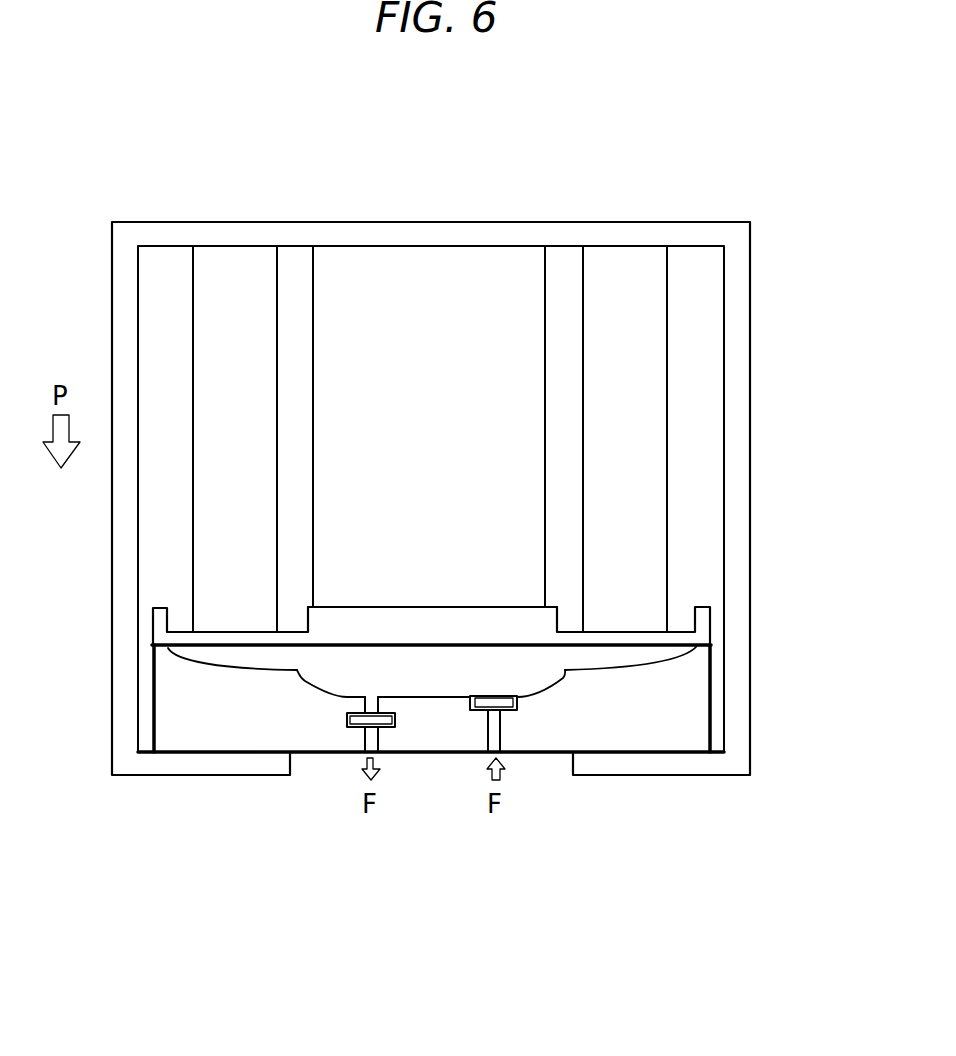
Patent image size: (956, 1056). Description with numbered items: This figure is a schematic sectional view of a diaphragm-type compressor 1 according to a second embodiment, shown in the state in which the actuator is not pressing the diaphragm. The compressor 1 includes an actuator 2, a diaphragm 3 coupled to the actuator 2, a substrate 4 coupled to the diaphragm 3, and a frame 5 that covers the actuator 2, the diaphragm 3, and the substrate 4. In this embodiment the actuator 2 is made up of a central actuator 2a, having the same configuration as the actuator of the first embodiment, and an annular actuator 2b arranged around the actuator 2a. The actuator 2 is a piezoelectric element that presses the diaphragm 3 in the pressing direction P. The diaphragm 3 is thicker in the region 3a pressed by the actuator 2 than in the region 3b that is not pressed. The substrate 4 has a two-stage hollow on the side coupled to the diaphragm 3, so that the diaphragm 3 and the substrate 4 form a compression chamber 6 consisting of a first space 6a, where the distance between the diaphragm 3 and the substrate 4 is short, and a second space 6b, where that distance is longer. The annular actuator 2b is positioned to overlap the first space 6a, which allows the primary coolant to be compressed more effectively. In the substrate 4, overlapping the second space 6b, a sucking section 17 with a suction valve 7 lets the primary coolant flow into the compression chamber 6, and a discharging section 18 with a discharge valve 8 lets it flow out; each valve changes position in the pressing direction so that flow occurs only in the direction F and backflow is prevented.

The diaphragm-type compressor 1 is at (710, 163).
The actuator 2 is at (430, 382).
The actuator 2a is at (412, 297).
The annular actuator 2b is at (237, 265).
The diaphragm 3 is at (444, 527).
The region pressed by the actuator 3a is at (510, 622).
The region not pressed by the actuator 3b is at (623, 630).
The substrate 4 is at (183, 705).
The frame 5 is at (215, 233).
The compression chamber 6 is at (455, 780).
The first space 6a is at (610, 655).
The second space 6b is at (545, 680).
The suction valve 7 is at (495, 703).
The discharge valve 8 is at (367, 720).
The sucking section 17 is at (493, 730).
The discharging section 18 is at (372, 735).